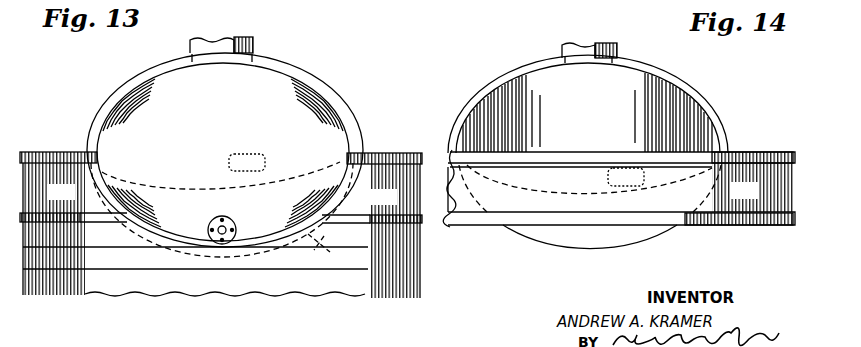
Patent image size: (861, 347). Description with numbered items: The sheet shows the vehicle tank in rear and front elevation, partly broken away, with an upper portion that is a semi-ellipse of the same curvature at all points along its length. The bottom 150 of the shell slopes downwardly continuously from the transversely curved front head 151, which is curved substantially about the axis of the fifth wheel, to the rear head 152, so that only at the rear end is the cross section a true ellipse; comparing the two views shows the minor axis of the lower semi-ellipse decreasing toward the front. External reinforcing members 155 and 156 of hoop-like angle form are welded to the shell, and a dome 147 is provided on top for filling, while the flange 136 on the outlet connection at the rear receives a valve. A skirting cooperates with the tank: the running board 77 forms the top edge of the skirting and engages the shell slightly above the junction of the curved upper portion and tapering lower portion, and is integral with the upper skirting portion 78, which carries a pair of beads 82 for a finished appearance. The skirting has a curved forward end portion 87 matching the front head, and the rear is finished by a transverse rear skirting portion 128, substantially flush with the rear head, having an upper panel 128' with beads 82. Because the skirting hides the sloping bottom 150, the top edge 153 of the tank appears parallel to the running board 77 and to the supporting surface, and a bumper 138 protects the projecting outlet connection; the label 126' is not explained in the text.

In FIG. 13, the running board 77 is at (48, 152).
In FIG. 14, the running board 77 is at (455, 150).
In FIG. 13, the upper skirting portion 78 is at (18, 182).
In FIG. 13, the beads 82 is at (44, 213).
In FIG. 14, the beads 82 is at (621, 194).
In FIG. 14, the curved forward end portion 87 is at (465, 200).
In FIG. 14, the vehicle body 126' is at (514, 8).
In FIG. 13, the transverse rear skirting portion 128 is at (420, 233).
In FIG. 13, the upper panel 128' is at (195, 221).
In FIG. 13, the flange 136 is at (232, 222).
In FIG. 13, the bumper 138 is at (293, 258).
In FIG. 13, the domes 147 is at (242, 38).
In FIG. 14, the domes 147 is at (573, 50).
In FIG. 13, the bottom 150 is at (213, 193).
In FIG. 14, the bottom 150 is at (582, 193).
In FIG. 14, the front head 151 is at (650, 98).
In FIG. 13, the rear head 152 is at (313, 90).
In FIG. 13, the top edge 153 is at (220, 63).
In FIG. 14, the top edge 153 is at (587, 68).
In FIG. 14, the external reinforcing member 155 is at (518, 71).
In FIG. 13, the external reinforcing member 156 is at (290, 63).